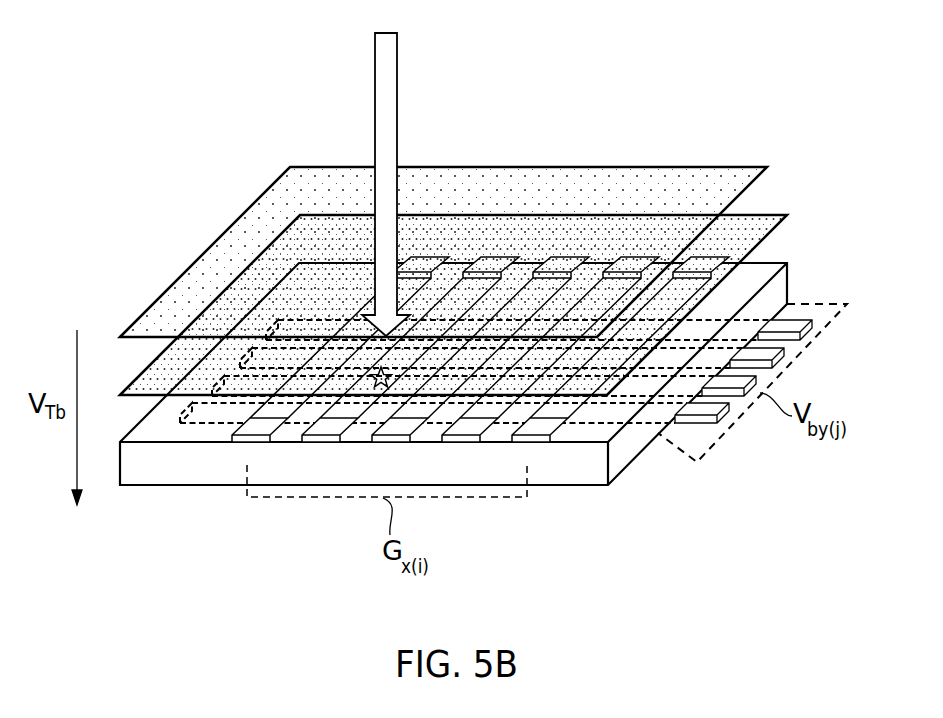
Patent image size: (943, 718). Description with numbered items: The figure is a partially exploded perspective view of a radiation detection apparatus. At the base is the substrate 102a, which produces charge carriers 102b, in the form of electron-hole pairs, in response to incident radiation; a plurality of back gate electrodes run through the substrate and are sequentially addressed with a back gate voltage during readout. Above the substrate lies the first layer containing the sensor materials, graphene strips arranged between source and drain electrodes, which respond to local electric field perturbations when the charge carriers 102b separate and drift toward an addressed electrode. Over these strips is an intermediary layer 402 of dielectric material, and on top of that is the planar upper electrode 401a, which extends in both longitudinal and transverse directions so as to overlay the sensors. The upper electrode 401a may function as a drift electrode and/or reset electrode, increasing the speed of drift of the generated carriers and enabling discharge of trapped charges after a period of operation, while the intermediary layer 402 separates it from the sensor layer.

The further electrode (upper electrode) 401a is at (763, 168).
The intermediary layer 402 is at (783, 217).
The substrate 102a is at (777, 287).
The charge carriers 102b is at (380, 392).